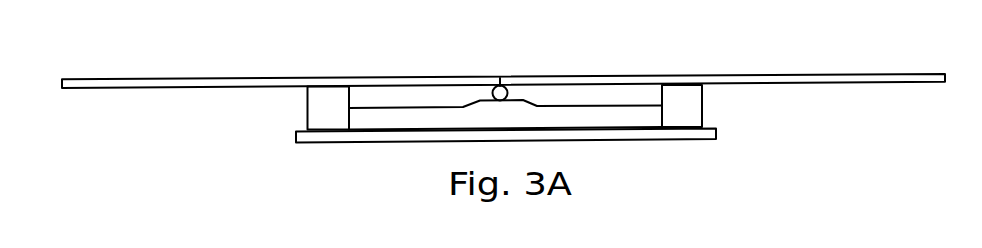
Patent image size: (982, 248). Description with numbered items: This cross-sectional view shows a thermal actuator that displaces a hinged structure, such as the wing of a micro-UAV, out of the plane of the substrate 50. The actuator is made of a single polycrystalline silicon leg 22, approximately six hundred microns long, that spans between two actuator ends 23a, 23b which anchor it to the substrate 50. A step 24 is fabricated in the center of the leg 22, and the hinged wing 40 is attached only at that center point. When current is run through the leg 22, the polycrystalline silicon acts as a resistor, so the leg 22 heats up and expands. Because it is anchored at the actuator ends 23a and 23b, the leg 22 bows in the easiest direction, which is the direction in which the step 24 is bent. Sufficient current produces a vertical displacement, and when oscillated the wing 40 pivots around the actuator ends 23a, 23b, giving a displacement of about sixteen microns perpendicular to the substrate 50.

The polycrystalline silicon leg 22 is at (494, 65).
The actuator end 23a is at (307, 108).
The actuator end 23b is at (702, 107).
The step 24 is at (512, 100).
The hinged wing 40 is at (213, 78).
The substrate 50 is at (635, 140).